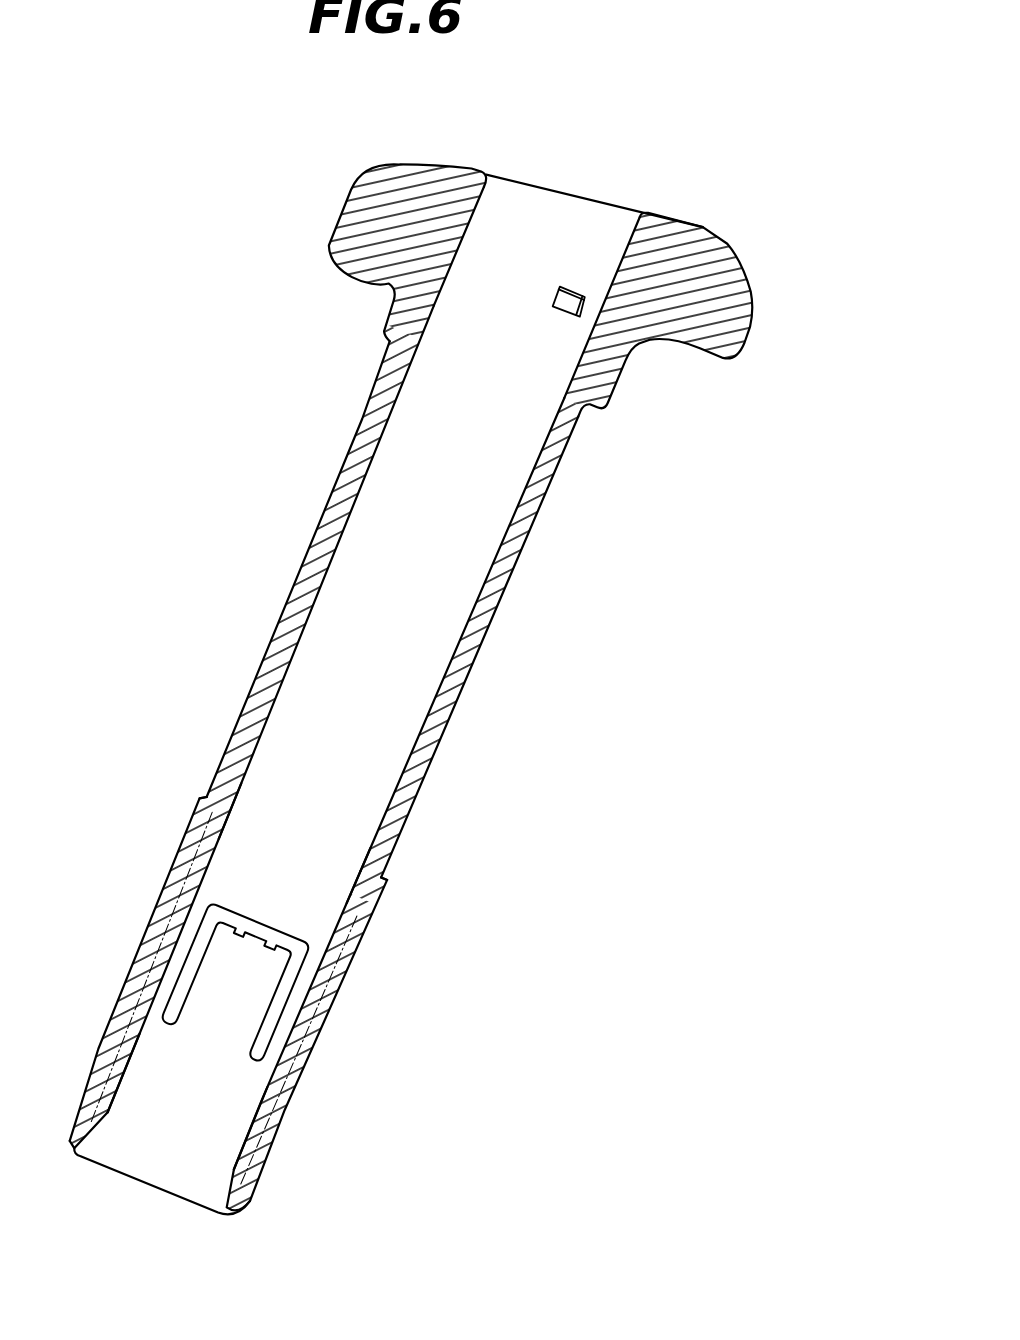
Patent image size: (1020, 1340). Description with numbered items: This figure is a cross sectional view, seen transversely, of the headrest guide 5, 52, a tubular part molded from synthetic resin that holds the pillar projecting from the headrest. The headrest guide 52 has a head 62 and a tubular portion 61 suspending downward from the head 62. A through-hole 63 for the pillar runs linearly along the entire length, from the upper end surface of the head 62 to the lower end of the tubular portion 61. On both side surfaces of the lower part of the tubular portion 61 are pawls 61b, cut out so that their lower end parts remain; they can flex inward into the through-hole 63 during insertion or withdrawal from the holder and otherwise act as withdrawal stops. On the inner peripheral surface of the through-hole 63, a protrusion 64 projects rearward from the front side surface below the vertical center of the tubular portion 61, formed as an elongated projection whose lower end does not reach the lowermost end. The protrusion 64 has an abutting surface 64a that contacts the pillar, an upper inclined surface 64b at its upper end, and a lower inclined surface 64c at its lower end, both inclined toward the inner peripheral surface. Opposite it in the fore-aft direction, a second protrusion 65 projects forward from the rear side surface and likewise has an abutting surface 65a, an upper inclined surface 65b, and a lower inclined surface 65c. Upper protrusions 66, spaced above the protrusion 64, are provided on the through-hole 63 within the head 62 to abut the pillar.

The guide member 5 is at (387, 689).
The headrest guide 52 is at (703, 228).
The tubular portion 61 is at (499, 596).
The pawls 61b is at (242, 960).
The head 62 is at (393, 213).
The through-hole 63 is at (369, 546).
The protrusion 64 is at (207, 880).
The abutting surface 64a is at (128, 1070).
The upper inclined surface 64b is at (238, 798).
The lower inclined surface 64c is at (103, 1120).
The second protrusion 65 is at (343, 912).
The abutting surface 65a is at (260, 1105).
The upper inclined surface 65b is at (367, 870).
The lower inclined surface 65c is at (235, 1178).
The upper protrusions 66 is at (568, 313).